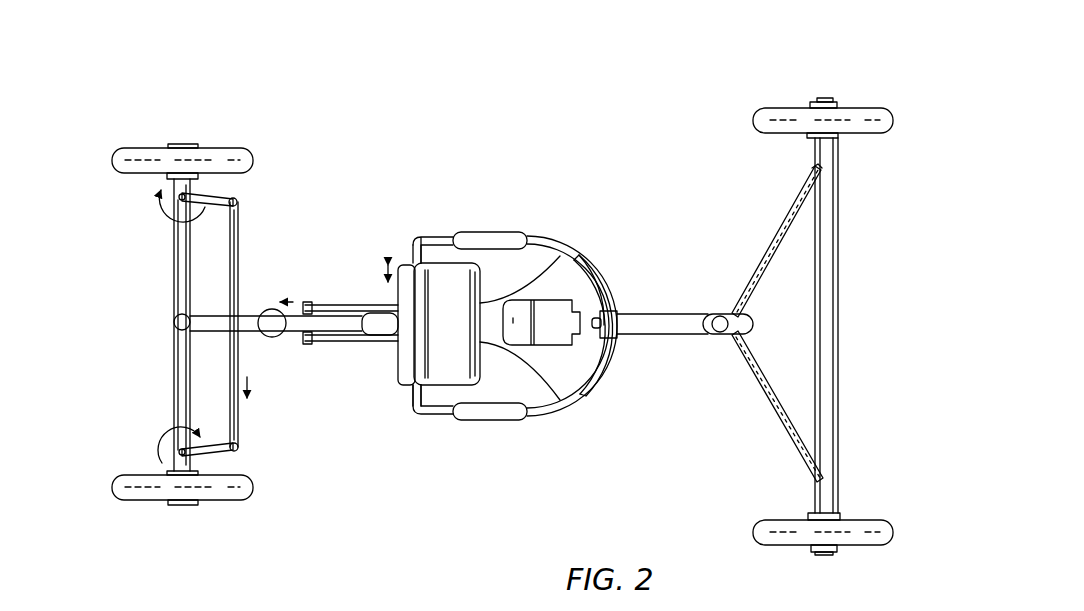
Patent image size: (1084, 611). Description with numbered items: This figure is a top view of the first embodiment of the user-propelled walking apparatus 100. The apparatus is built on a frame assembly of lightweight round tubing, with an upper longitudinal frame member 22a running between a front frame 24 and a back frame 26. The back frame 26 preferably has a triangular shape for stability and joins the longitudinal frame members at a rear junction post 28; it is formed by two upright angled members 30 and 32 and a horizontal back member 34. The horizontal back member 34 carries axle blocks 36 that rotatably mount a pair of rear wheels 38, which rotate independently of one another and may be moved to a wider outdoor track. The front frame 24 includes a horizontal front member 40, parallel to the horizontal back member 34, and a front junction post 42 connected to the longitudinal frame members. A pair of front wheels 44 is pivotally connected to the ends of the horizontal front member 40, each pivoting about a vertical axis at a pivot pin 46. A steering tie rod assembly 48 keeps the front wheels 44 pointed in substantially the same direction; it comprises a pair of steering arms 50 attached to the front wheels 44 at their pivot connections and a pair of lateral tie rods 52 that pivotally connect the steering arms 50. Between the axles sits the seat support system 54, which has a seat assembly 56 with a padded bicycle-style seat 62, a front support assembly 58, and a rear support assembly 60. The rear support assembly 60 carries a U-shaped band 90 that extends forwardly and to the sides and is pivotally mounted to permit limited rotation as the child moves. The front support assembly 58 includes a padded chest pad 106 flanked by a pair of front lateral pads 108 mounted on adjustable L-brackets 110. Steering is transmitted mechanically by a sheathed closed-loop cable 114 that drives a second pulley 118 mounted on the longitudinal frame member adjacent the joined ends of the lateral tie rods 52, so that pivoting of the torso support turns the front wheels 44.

The upper longitudinal frame member 22a is at (340, 325).
The front frame 24 is at (173, 270).
The back frame 26 is at (772, 262).
The rear junction post 28 is at (736, 318).
The upright angled member 30 is at (775, 418).
The upright angled member 32 is at (800, 208).
The horizontal back member 34 is at (841, 316).
The axle block 36 is at (820, 98).
The rear wheel 38 is at (870, 110).
The horizontal front member 40 is at (173, 381).
The front junction post 42 is at (173, 322).
The front wheel 44 is at (135, 152).
The pivot pin 46 is at (176, 205).
The steering tie rod assembly 48 is at (240, 222).
The steering arm 50 is at (225, 200).
The lateral tie rods 52 is at (239, 278).
The seat support system 54 is at (487, 233).
The seat assembly 56 is at (583, 262).
The front support assembly 58 is at (402, 265).
The rear support assembly 60 is at (592, 348).
The padded bicycle-style seat 62 is at (598, 283).
The U-shaped band 90 is at (556, 398).
The user-propelled walking apparatus 100 is at (458, 152).
The padded chest pad 106 is at (418, 380).
The front lateral pad 108 is at (515, 240).
The adjustable L-bracket 110 is at (432, 237).
The sheathed closed-loop cable 114 is at (300, 344).
The second pulley 118 is at (268, 337).